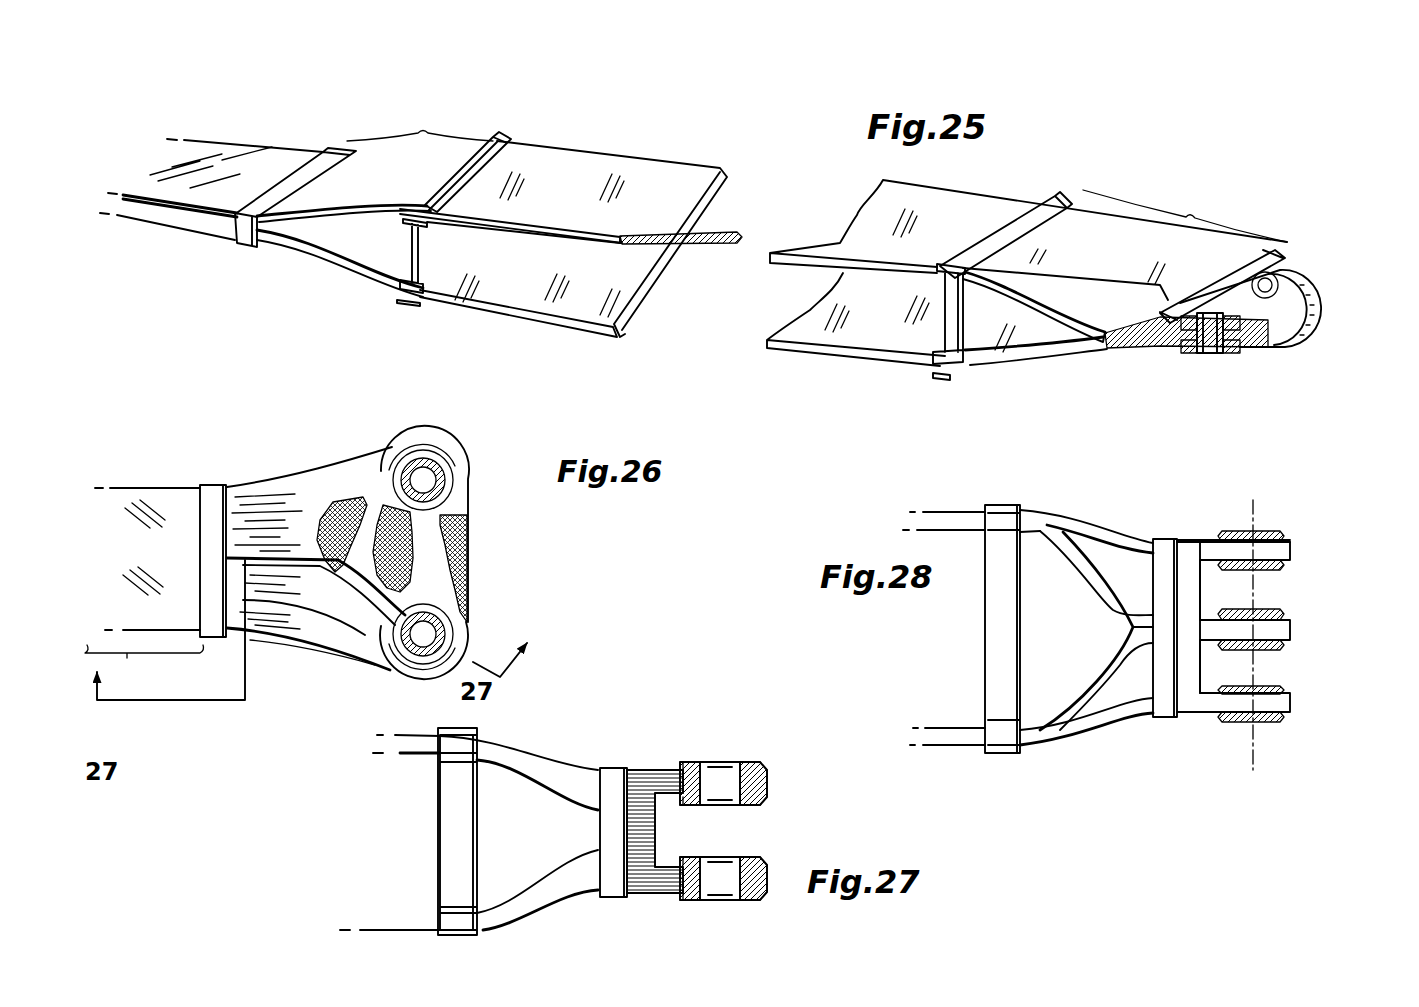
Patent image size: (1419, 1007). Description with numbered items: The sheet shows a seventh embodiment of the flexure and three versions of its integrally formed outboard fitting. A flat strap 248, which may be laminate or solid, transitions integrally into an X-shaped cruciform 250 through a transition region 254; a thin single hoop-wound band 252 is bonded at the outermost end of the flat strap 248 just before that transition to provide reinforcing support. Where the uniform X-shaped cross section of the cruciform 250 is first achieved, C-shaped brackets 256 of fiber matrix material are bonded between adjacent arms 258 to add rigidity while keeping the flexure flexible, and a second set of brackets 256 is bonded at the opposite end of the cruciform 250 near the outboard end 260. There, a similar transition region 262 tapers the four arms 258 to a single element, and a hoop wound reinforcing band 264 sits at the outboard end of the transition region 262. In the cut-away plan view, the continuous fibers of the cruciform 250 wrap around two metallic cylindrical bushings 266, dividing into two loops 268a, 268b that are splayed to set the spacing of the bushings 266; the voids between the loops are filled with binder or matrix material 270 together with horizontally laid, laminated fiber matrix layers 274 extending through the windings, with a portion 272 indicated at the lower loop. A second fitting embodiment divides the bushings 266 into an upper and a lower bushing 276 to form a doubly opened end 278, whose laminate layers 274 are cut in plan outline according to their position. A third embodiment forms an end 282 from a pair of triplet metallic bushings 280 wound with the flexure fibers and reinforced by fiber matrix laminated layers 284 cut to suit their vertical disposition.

In FIG. 25, the flat strap 248 is at (233, 153).
In FIG. 25, the X-shaped cruciform 250 is at (673, 210).
In FIG. 27, the X-shaped cruciform 250 is at (417, 747).
In FIG. 25, the hoop-wound band 252 is at (300, 177).
In FIG. 25, the transition region 254 is at (420, 117).
In FIG. 25, the C-shaped brackets 256 is at (460, 170).
In FIG. 27, the C-shaped brackets 256 is at (447, 833).
In FIG. 28, the C-shaped brackets 256 is at (990, 633).
In FIG. 25, the arms 258 is at (567, 163).
In FIG. 25, the outboard end 260 is at (1263, 343).
In FIG. 26, the outboard end 260 is at (468, 582).
In FIG. 25, the transition region 262 is at (1027, 273).
In FIG. 26, the transition region 262 is at (144, 590).
In FIG. 25, the hoop wound reinforcing band 264 is at (1223, 270).
In FIG. 26, the hoop wound reinforcing band 264 is at (250, 457).
In FIG. 27, the hoop wound reinforcing band 264 is at (613, 768).
In FIG. 28, the hoop wound reinforcing band 264 is at (1170, 712).
In FIG. 25, the cylindrical bushings 266 is at (1267, 283).
In FIG. 26, the cylindrical bushings 266 is at (437, 462).
In FIG. 26, the loop 268a is at (300, 622).
In FIG. 26, the loop 268b is at (337, 480).
In FIG. 26, the binder or matrix material 270 is at (398, 500).
In FIG. 26, the strap portion 272 is at (375, 645).
In FIG. 26, the laminated fiber matrix layers 274 is at (403, 563).
In FIG. 27, the laminated fiber matrix layers 274 is at (770, 782).
In FIG. 27, the upper and lower bushing 276 is at (750, 762).
In FIG. 27, the doubly opened end 278 is at (763, 828).
In FIG. 28, the triplet metallic bushings 280 is at (1270, 535).
In FIG. 28, the end 282 is at (1320, 645).
In FIG. 28, the fiber matrix laminated layers 284 is at (1280, 705).